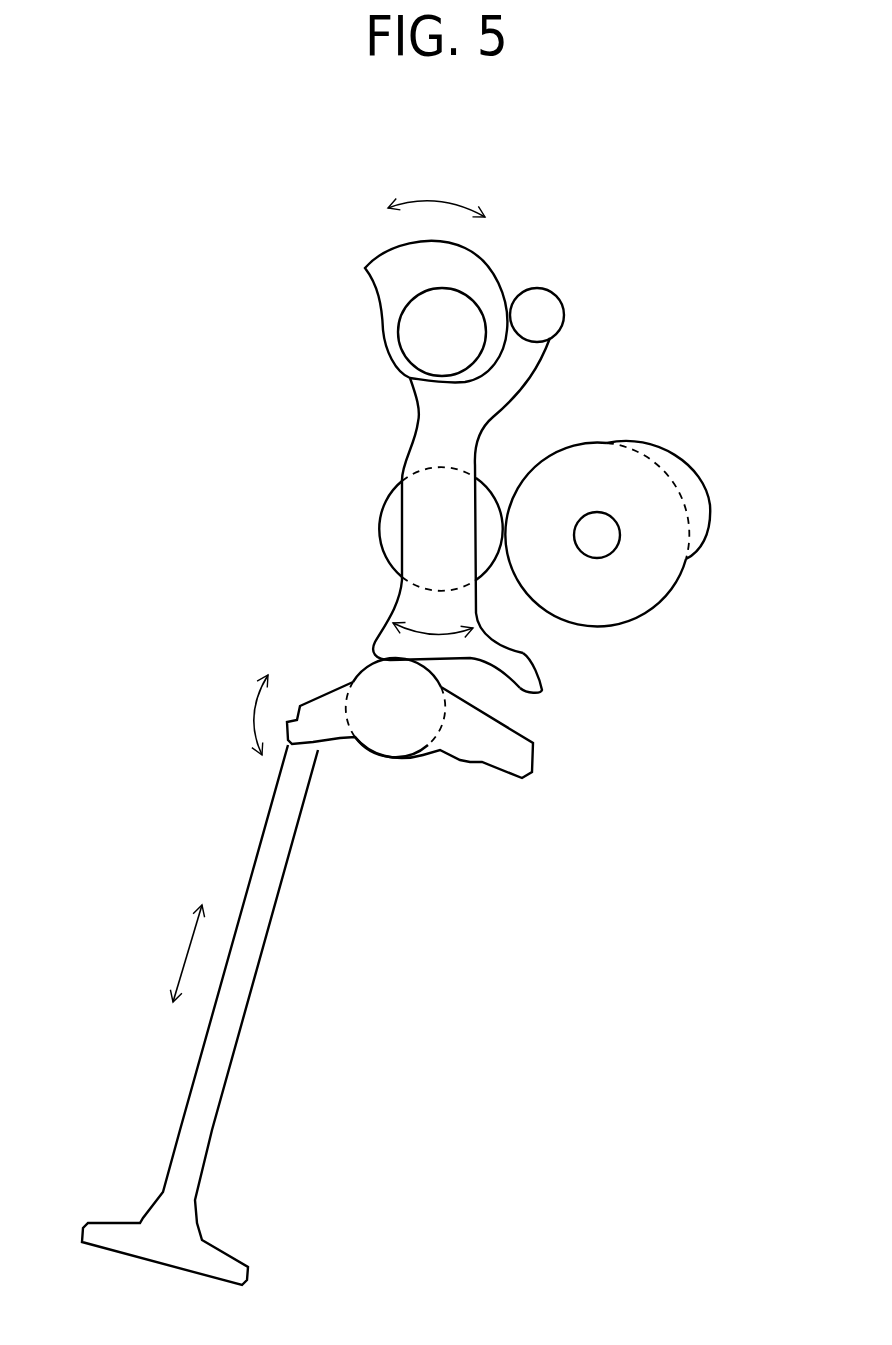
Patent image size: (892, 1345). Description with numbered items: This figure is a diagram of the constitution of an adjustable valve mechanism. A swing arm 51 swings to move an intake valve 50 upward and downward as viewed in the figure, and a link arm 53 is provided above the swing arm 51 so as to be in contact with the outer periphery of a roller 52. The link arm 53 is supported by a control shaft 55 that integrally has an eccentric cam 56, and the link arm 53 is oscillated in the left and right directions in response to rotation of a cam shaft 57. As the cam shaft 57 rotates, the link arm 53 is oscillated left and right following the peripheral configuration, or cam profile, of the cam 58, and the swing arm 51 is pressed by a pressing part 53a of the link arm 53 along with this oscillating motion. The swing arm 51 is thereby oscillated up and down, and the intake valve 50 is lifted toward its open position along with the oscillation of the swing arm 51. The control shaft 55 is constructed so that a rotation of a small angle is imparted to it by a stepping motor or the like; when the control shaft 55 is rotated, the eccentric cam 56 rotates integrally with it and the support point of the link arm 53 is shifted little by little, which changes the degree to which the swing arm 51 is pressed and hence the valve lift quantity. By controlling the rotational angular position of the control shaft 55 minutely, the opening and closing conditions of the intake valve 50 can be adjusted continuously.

The intake valve 50 is at (251, 993).
The swing arm 51 is at (327, 693).
The roller 52 is at (370, 668).
The link arm 53 is at (417, 422).
The pressing part 53a is at (512, 690).
The control shaft 55 is at (477, 300).
The eccentric cam 56 is at (470, 262).
The cam shaft 57 is at (642, 618).
The cam 58 is at (673, 443).